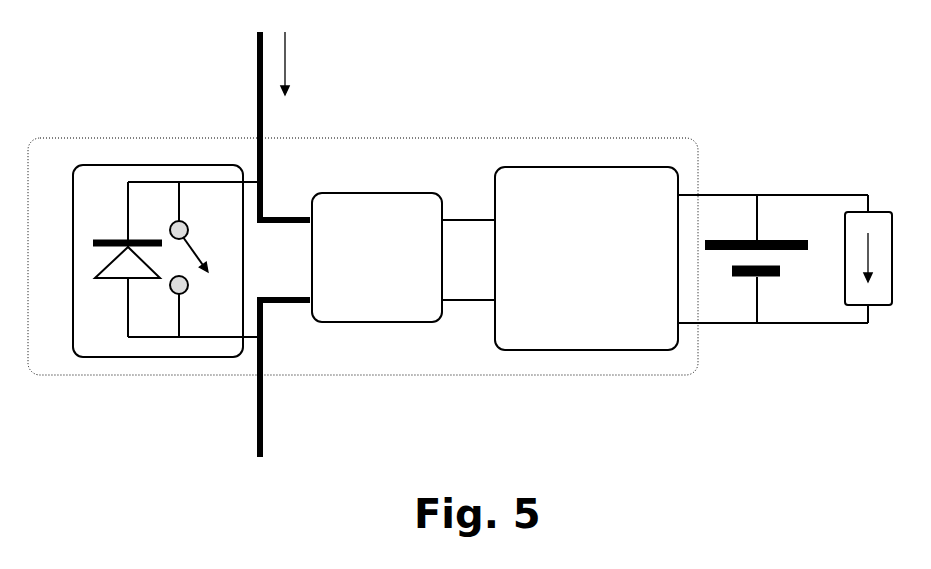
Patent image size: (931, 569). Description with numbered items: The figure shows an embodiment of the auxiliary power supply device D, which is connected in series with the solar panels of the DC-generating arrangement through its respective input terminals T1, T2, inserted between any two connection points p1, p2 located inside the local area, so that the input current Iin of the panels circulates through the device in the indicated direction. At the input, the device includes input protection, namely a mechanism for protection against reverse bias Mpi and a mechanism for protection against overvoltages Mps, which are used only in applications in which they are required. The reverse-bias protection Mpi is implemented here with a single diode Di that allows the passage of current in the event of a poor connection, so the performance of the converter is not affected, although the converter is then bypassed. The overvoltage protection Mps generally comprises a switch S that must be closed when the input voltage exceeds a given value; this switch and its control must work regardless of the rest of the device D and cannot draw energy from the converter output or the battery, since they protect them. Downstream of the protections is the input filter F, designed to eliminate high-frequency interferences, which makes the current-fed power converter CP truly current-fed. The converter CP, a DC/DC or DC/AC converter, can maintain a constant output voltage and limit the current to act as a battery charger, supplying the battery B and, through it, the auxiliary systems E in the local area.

The auxiliary power supply device D is at (669, 118).
The input terminal T1 is at (285, 212).
The input terminal T2 is at (295, 302).
The connection point p1 is at (265, 213).
The connection point p2 is at (262, 303).
The input current Iin is at (296, 63).
The mechanism for protection against reverse bias Mpi is at (165, 223).
The mechanism for protection against overvoltages Mps is at (165, 261).
The diode Di is at (126, 259).
The switch S is at (192, 259).
The input filter F is at (377, 257).
The current-fed power converter CP is at (586, 258).
The battery B is at (756, 236).
The auxiliary systems E is at (868, 236).